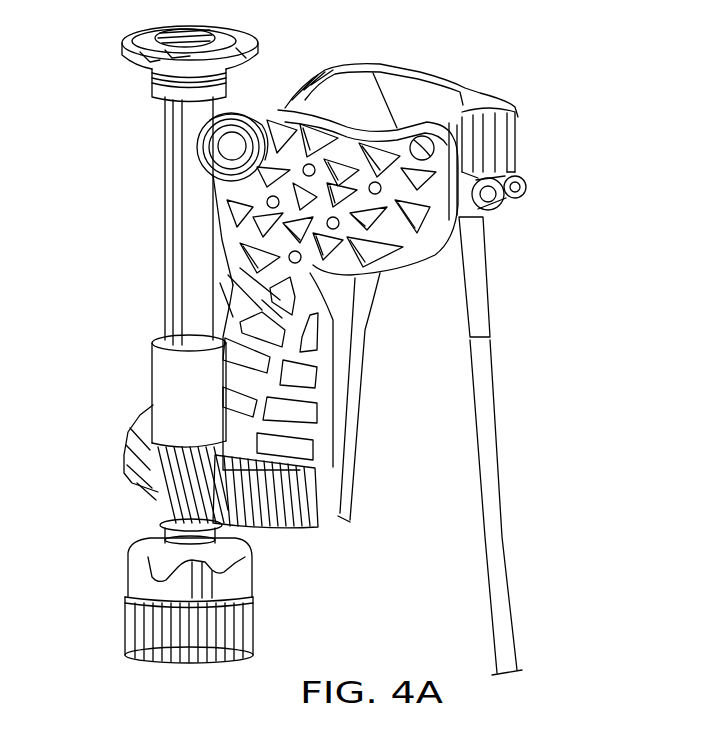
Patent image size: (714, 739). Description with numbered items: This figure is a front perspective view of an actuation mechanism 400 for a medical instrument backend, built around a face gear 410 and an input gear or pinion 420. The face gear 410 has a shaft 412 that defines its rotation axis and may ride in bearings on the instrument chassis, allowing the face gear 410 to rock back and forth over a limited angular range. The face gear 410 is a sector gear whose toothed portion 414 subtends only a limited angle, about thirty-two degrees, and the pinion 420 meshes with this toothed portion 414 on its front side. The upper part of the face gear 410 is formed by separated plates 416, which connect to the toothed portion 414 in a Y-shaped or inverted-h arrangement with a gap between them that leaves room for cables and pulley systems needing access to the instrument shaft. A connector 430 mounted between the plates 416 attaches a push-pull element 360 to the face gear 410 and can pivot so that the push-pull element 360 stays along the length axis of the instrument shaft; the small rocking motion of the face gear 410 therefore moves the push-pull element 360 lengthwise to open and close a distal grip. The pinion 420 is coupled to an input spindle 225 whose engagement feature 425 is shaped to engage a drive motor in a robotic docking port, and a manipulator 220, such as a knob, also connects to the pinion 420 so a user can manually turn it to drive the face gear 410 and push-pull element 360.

The actuation mechanism 400 is at (545, 76).
The engagement feature 425 is at (123, 65).
The input spindle 225 is at (165, 283).
The pinion 420 is at (152, 506).
The manipulator 220 is at (127, 626).
The shaft 412 is at (230, 145).
The plates 416 is at (433, 70).
The connector 430 is at (527, 192).
The push-pull element 360 is at (500, 500).
The face gear 410 is at (347, 420).
The toothed portion 414 is at (268, 522).